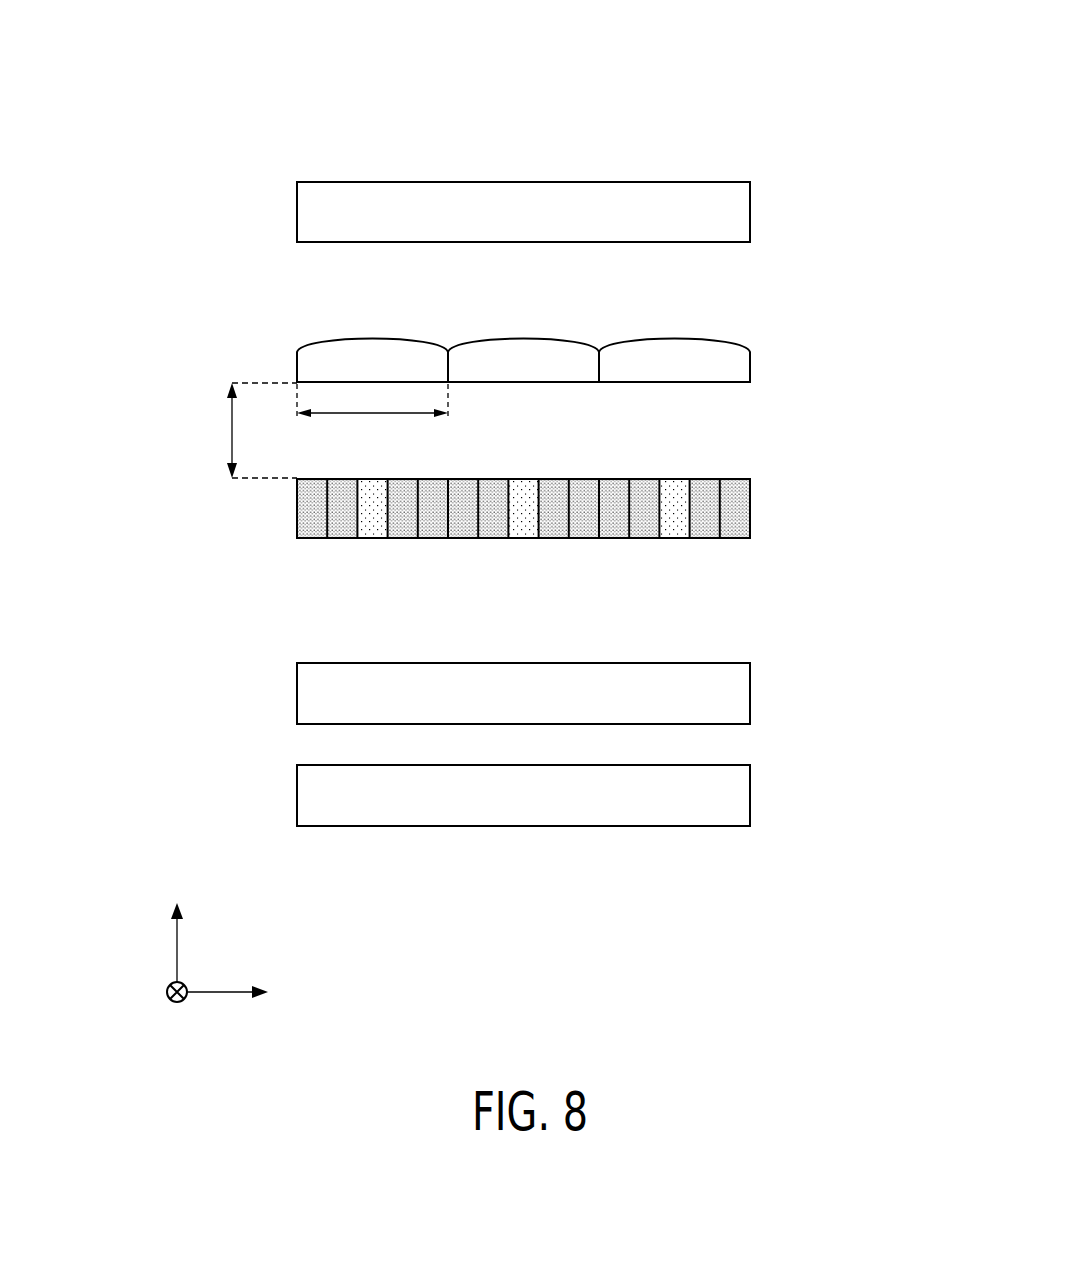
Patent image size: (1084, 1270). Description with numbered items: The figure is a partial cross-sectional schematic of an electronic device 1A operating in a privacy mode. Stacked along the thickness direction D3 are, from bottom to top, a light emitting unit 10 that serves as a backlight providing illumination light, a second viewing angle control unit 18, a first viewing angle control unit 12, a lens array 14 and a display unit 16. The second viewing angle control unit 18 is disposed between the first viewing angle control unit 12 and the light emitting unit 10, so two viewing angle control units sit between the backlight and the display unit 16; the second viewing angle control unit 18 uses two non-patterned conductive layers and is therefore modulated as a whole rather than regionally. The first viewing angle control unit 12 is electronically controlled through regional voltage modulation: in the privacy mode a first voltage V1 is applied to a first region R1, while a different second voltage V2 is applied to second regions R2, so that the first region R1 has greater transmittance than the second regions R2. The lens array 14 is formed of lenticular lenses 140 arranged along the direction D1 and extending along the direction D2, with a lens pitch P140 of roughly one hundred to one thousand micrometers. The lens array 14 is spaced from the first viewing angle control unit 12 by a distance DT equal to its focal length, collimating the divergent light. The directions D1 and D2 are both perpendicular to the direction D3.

The electronic device 1A is at (762, 50).
The display unit 16 is at (758, 182).
The lens array 14 is at (518, 361).
The lenticular lenses 140 is at (325, 365).
The lens pitch P140 is at (372, 418).
The distance DT is at (242, 430).
The first viewing angle control unit 12 is at (758, 479).
The second region R2 is at (358, 545).
The second voltage V2 is at (327, 604).
The first region R1 is at (675, 552).
The first voltage V1 is at (373, 907).
The second viewing angle control unit 18 is at (758, 663).
The light emitting unit 10 is at (758, 765).
The direction D1 is at (251, 992).
The direction D2 is at (158, 1010).
The direction D3 is at (177, 925).